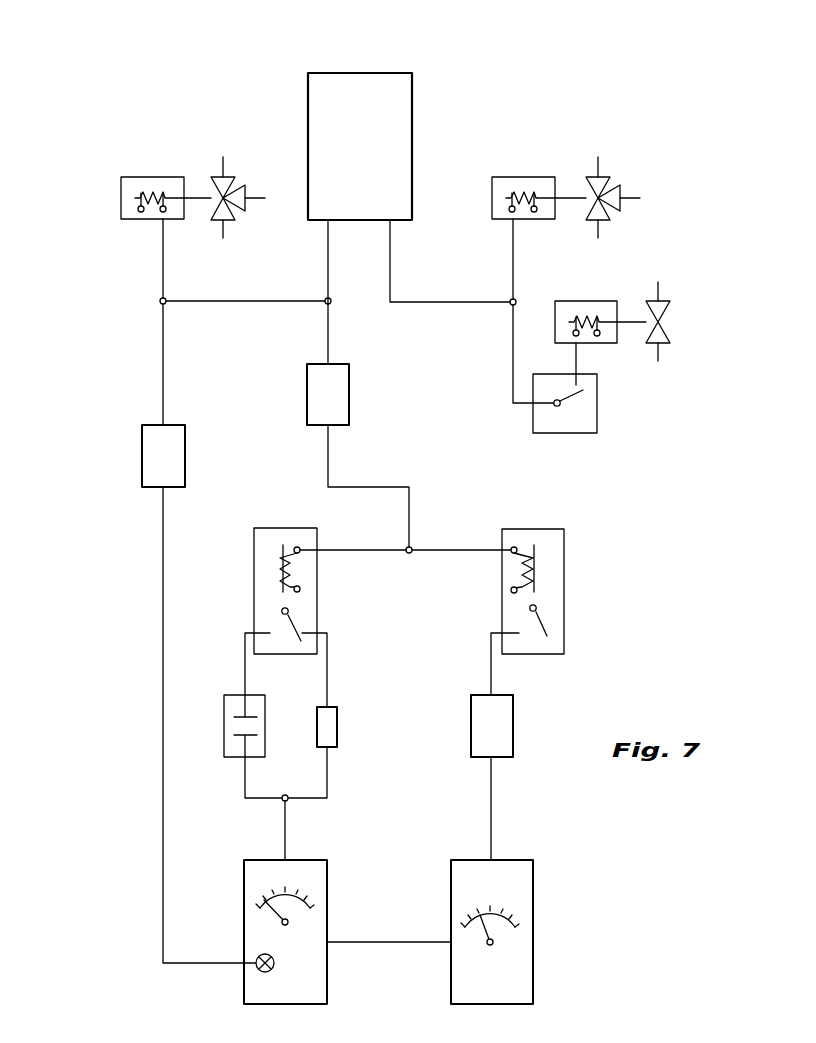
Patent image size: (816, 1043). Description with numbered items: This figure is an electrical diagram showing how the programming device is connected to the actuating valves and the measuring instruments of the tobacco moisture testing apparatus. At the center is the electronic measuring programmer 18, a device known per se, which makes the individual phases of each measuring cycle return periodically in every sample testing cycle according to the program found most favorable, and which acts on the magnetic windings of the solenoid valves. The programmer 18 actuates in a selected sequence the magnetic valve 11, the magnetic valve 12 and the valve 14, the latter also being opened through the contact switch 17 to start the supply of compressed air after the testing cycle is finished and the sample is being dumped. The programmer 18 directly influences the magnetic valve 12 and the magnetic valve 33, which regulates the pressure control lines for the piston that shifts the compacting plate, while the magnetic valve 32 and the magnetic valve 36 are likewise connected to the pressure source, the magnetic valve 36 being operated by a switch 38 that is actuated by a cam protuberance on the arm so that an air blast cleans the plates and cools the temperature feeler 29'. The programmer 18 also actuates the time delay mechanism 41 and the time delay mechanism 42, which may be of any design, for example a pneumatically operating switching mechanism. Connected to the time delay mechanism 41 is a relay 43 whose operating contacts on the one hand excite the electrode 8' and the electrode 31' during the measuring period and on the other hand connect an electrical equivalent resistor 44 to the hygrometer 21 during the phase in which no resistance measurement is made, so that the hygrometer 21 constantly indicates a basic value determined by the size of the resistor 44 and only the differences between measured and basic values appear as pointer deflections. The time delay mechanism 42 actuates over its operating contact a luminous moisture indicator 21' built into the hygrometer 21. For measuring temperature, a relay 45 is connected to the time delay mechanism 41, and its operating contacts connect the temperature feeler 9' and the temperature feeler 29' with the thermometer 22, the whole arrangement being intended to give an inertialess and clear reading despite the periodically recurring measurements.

The electronic measuring programmer 18 is at (368, 131).
The magnetic valve 12 is at (193, 189).
The magnetic valve 33 is at (200, 162).
The magnetic valve 11 is at (566, 189).
The magnetic valve 32 is at (568, 162).
The valve 14 is at (612, 312).
The magnetic valve 36 is at (626, 287).
The contact switch 17 is at (599, 403).
The switch 38 is at (588, 416).
The time delay mechanism 41 is at (349, 412).
The time delay mechanism 42 is at (224, 367).
The relay 43 is at (312, 610).
The relay 45 is at (560, 607).
The electrical equivalent resistor 44 is at (337, 717).
The electrode 8' is at (226, 725).
The electrode 31' is at (226, 725).
The temperature feeler 9' is at (603, 708).
The temperature feeler 29' is at (603, 708).
The hygrometer 21 is at (225, 920).
The luminous moisture indicator 21' is at (164, 991).
The thermometer 22 is at (552, 852).